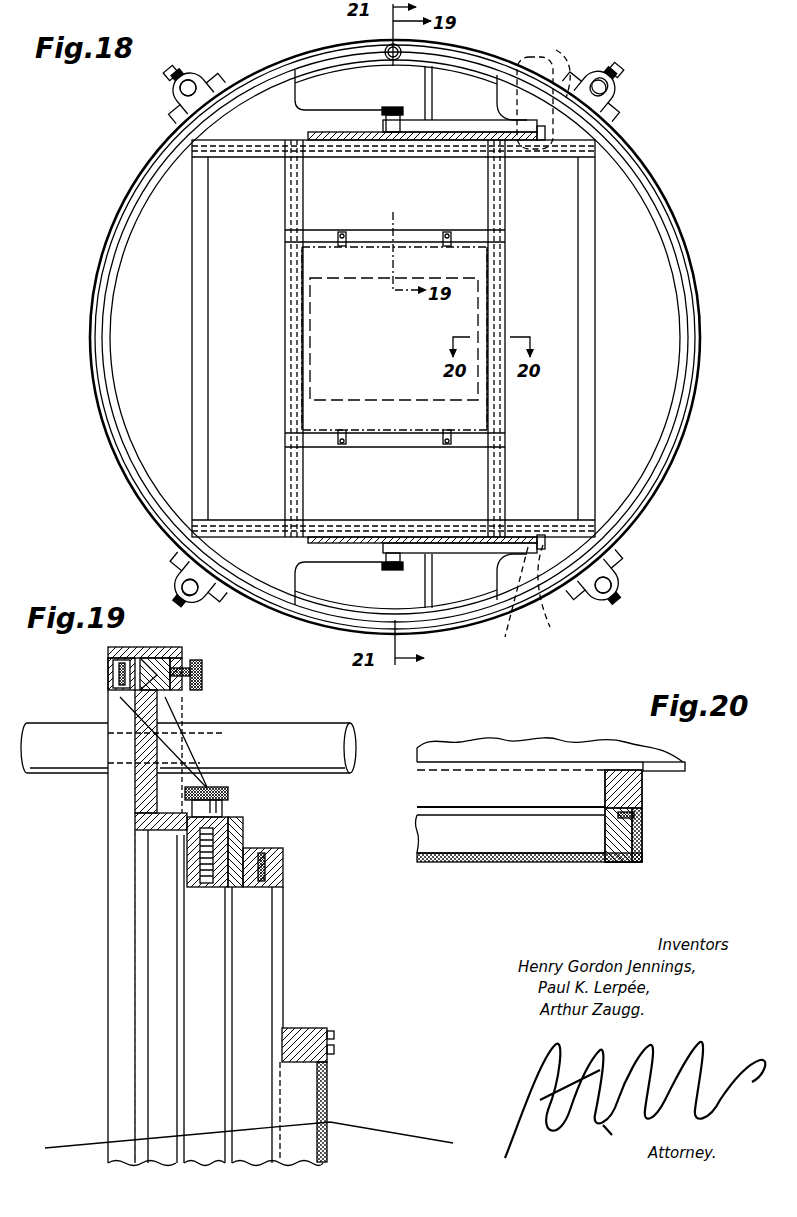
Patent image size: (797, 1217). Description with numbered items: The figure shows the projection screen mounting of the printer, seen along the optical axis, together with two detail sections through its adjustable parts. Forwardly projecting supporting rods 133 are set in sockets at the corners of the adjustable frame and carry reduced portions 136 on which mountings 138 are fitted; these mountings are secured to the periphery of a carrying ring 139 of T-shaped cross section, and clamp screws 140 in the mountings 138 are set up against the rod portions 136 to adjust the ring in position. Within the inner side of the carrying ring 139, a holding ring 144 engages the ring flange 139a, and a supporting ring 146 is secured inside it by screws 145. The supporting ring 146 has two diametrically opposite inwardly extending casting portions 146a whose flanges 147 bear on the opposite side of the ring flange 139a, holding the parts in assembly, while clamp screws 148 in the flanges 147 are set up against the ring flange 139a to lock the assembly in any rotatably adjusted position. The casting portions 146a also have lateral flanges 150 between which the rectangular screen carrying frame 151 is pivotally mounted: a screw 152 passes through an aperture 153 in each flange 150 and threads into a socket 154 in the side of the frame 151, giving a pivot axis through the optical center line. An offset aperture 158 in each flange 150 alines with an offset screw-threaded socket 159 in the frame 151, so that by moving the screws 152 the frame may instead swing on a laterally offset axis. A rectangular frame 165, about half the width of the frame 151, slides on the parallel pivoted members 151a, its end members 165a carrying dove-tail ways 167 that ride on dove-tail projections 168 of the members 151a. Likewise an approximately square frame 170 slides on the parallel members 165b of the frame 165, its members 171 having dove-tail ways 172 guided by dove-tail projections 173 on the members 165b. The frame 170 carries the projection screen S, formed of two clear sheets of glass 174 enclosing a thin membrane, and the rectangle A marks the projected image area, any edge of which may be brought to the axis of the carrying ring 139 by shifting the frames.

In FIG. 19, the supporting rod 133 is at (50, 720).
In FIG. 18, the reduced portion 136 is at (182, 95).
In FIG. 19, the reduced portion 136 is at (335, 712).
In FIG. 18, the mounting 138 is at (200, 80).
In FIG. 18, the carrying ring 139 is at (128, 195).
In FIG. 19, the carrying ring 139 is at (105, 655).
In FIG. 18, the ring flange 139a is at (115, 236).
In FIG. 19, the ring flange 139a is at (128, 665).
In FIG. 18, the clamp screw 140 is at (170, 74).
In FIG. 19, the holding ring 144 is at (113, 672).
In FIG. 19, the screw 145 is at (118, 700).
In FIG. 18, the supporting ring 146 is at (113, 320).
In FIG. 19, the supporting ring 146 is at (108, 1022).
In FIG. 18, the casting portion 146a is at (333, 90).
In FIG. 19, the casting portion 146a is at (160, 720).
In FIG. 19, the flange 147 is at (160, 662).
In FIG. 18, the clamp screw 148 is at (403, 55).
In FIG. 19, the clamp screw 148 is at (203, 677).
In FIG. 18, the lateral flange 150 is at (442, 125).
In FIG. 19, the lateral flange 150 is at (225, 820).
In FIG. 18, the screen carrying frame 151 is at (602, 240).
In FIG. 19, the screen carrying frame 151 is at (177, 996).
In FIG. 20, the screen carrying frame 151 is at (558, 745).
In FIG. 18, the parallel pivoted member 151a is at (262, 160).
In FIG. 19, the parallel pivoted member 151a is at (222, 922).
In FIG. 20, the parallel pivoted member 151a is at (500, 748).
In FIG. 18, the screw 152 is at (375, 110).
In FIG. 19, the screw 152 is at (220, 818).
In FIG. 19, the aperture 153 is at (138, 836).
In FIG. 19, the socket 154 is at (198, 866).
In FIG. 18, the offset aperture 158 is at (526, 349).
In FIG. 18, the offset screw-threaded socket 159 is at (572, 337).
In FIG. 18, the rectangular frame 165 is at (508, 204).
In FIG. 19, the rectangular frame 165 is at (262, 928).
In FIG. 20, the rectangular frame 165 is at (648, 782).
In FIG. 18, the end member 165a is at (362, 162).
In FIG. 19, the end member 165a is at (285, 865).
In FIG. 20, the end member 165a is at (511, 794).
In FIG. 18, the parallel member 165b is at (288, 455).
In FIG. 19, the parallel member 165b is at (258, 994).
In FIG. 20, the parallel member 165b is at (628, 798).
In FIG. 19, the dove-tail way 167 is at (268, 860).
In FIG. 19, the dove-tail projection 168 is at (232, 838).
In FIG. 18, the rectangular frame 170 is at (413, 225).
In FIG. 19, the rectangular frame 170 is at (297, 1038).
In FIG. 20, the rectangular frame 170 is at (493, 835).
In FIG. 18, the parallel member 171 is at (290, 310).
In FIG. 19, the parallel member 171 is at (300, 1111).
In FIG. 20, the parallel member 171 is at (645, 837).
In FIG. 20, the dove-tail way 172 is at (642, 822).
In FIG. 20, the dove-tail projection 173 is at (636, 810).
In FIG. 18, the sheet of glass 174 is at (415, 428).
In FIG. 19, the sheet of glass 174 is at (330, 1098).
In FIG. 20, the sheet of glass 174 is at (525, 860).
In FIG. 18, the image area A is at (310, 345).
In FIG. 18, the projection screen S is at (462, 265).
In FIG. 19, the projection screen S is at (332, 1075).
In FIG. 20, the projection screen S is at (440, 866).